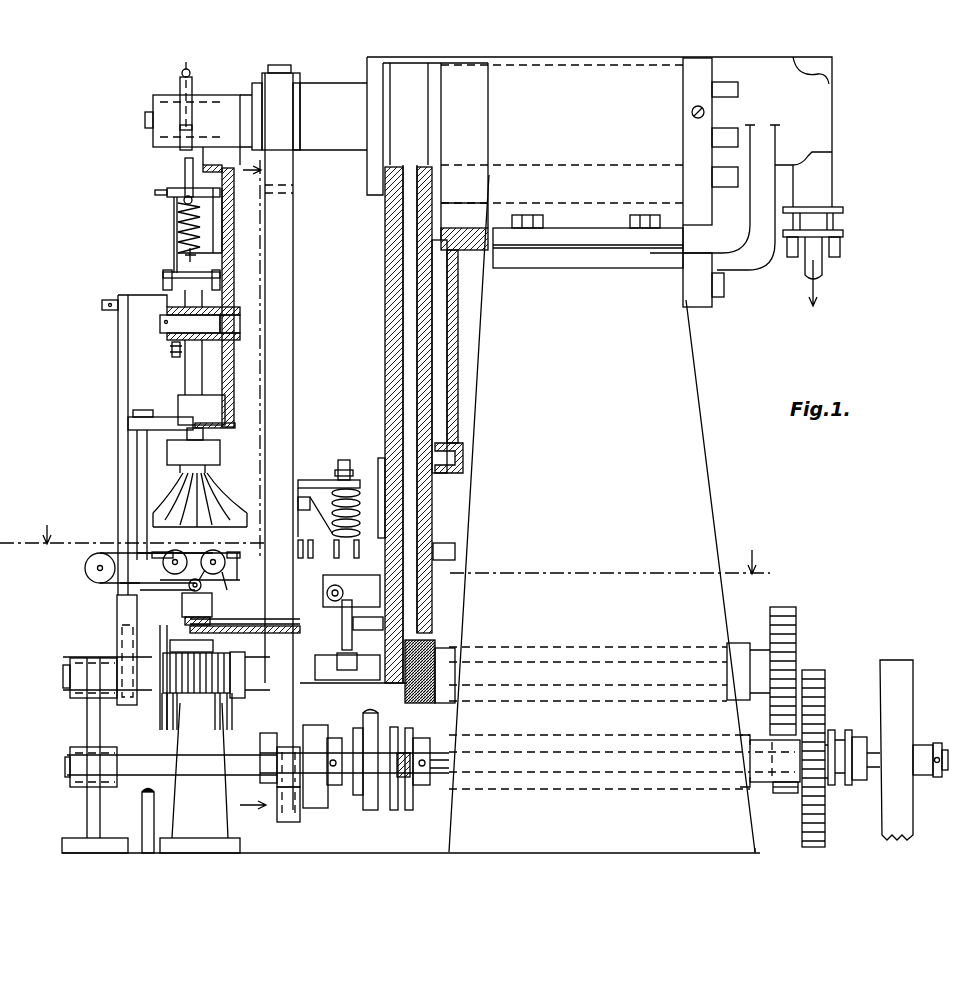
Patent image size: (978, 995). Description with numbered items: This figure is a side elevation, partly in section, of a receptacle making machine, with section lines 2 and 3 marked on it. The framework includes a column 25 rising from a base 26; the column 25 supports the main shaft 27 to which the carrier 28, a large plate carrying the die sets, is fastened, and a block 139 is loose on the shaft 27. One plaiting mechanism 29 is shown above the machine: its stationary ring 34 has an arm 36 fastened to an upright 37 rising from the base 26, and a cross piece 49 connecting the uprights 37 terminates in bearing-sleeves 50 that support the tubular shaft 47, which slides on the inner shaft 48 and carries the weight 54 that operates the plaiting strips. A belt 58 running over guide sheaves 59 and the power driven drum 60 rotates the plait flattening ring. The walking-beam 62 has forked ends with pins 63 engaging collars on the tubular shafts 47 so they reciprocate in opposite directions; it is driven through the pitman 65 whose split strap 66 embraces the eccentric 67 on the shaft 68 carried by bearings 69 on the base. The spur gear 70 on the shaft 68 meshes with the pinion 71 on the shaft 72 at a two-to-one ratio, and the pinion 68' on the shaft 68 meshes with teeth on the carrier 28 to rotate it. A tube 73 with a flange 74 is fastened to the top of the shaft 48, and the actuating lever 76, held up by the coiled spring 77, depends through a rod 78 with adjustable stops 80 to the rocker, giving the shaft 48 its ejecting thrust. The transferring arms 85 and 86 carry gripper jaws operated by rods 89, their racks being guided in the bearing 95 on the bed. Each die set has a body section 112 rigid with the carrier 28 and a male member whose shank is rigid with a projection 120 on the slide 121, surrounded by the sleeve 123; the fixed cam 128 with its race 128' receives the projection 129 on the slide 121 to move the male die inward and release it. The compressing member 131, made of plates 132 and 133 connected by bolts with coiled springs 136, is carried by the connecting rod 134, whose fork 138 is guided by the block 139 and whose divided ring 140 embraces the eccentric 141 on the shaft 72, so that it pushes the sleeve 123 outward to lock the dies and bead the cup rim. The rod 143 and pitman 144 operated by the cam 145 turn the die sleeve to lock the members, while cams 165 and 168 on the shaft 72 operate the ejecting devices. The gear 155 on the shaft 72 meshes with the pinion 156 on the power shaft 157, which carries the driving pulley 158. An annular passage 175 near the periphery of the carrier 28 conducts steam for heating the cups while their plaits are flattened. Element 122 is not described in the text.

The section line 2— 2 is at (256, 452).
The section line 3— 3 is at (385, 554).
The column 25 is at (700, 487).
The base 26 is at (630, 850).
The main shaft 27 is at (330, 148).
The carrier 28 is at (388, 358).
The plaiting mechanism 29 is at (200, 496).
The ring 34 is at (242, 560).
The arm 36 is at (120, 585).
The upright 37 is at (140, 443).
The tubular shaft 47 is at (190, 372).
The shaft 48 is at (178, 70).
The cross piece 49 is at (175, 422).
The bearing-sleeve 50 is at (201, 410).
The weight 54 is at (176, 452).
The belt 58 is at (115, 540).
The guide sheave 59 is at (202, 590).
The drum 60 is at (85, 568).
The walking-beam 62 is at (241, 305).
The pin 63 is at (234, 278).
The pitman 65 is at (118, 340).
The split strap 66 is at (117, 612).
The eccentric 67 is at (126, 645).
The shaft 68 is at (609, 686).
The pinion 68' is at (473, 693).
The bearing 69 is at (90, 808).
The spur gear 70 is at (790, 607).
The pinion 71 is at (782, 794).
The shaft 72 is at (490, 770).
The tube 73 is at (191, 90).
The flange 74 is at (185, 103).
The actuating member 76 is at (185, 175).
The coiled spring 77 is at (178, 228).
The rod 78 is at (172, 250).
The stop 80 is at (172, 348).
The transferring arm 85 is at (283, 617).
The transferring arm 86 is at (185, 605).
The rod 89 is at (265, 634).
The bearing 95 is at (190, 700).
The body section 112 is at (400, 703).
The projection 120 is at (381, 595).
The slide 121 is at (384, 622).
The column 122 is at (407, 455).
The sleeve 123 is at (384, 630).
The fixed cam 128 is at (509, 346).
The race 128' is at (508, 440).
The projection 129 is at (456, 550).
The compressing member 131 is at (323, 480).
The plate 132 is at (432, 527).
The plate 133 is at (362, 485).
The connecting rod 134 is at (296, 320).
The coiled spring 136 is at (352, 500).
The fork 138 is at (282, 110).
The block 139 is at (298, 122).
The divided ring 140 is at (282, 748).
The eccentric 141 is at (292, 823).
The rod 143 is at (300, 700).
The pitman 144 is at (325, 790).
The cam 145 is at (410, 800).
The gear 155 is at (812, 680).
The pinion 156 is at (822, 780).
The power shaft 157 is at (948, 773).
The pulley 158 is at (900, 703).
The cam 165 is at (363, 730).
The cam 168 is at (480, 800).
The annular passage 175 is at (384, 637).